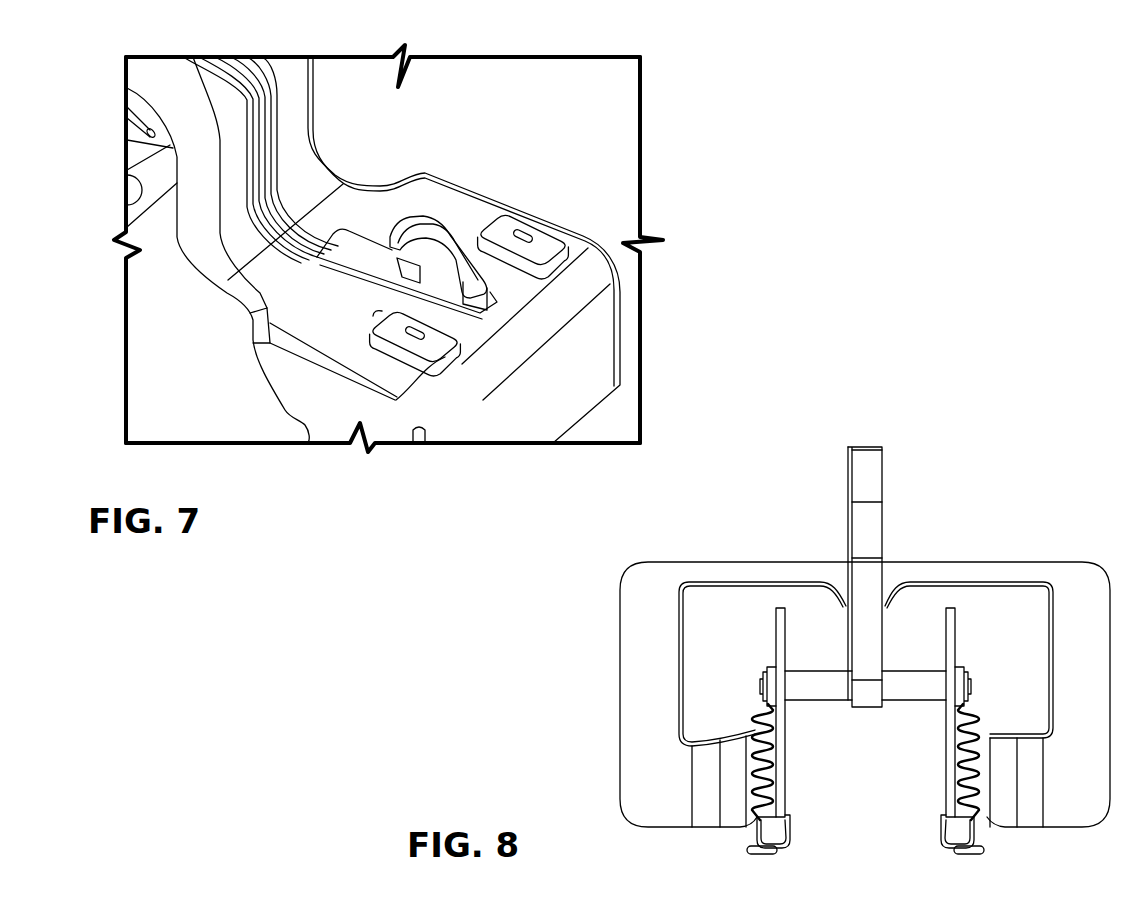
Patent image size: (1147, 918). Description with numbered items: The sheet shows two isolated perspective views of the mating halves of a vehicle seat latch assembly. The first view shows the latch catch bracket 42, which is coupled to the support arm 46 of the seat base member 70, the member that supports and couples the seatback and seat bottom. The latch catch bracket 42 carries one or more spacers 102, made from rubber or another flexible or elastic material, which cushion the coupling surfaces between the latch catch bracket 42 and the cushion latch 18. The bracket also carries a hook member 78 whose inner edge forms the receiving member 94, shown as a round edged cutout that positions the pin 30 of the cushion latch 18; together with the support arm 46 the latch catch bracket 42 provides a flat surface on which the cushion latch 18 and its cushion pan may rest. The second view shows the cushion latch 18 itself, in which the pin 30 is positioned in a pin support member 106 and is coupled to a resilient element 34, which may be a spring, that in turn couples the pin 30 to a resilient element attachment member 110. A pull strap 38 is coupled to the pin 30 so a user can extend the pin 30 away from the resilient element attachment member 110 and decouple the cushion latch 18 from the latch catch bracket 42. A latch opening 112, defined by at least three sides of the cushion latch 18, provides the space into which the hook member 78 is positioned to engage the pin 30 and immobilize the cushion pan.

In FIG. 8, the cushion latch 18 is at (1088, 648).
In FIG. 8, the pin 30 is at (810, 690).
In FIG. 8, the resilient element 34 is at (757, 792).
In FIG. 8, the pull strap 38 is at (867, 528).
In FIG. 7, the latch catch bracket 42 is at (565, 133).
In FIG. 7, the support arm 46 is at (289, 130).
In FIG. 7, the seat base member 70 is at (152, 187).
In FIG. 7, the hook member 78 is at (447, 278).
In FIG. 7, the receiving member 94 is at (388, 262).
In FIG. 7, the spacers 102 is at (548, 242).
In FIG. 8, the pin support member 106 is at (777, 630).
In FIG. 8, the resilient element attachment member 110 is at (770, 857).
In FIG. 8, the latch opening 112 is at (747, 643).